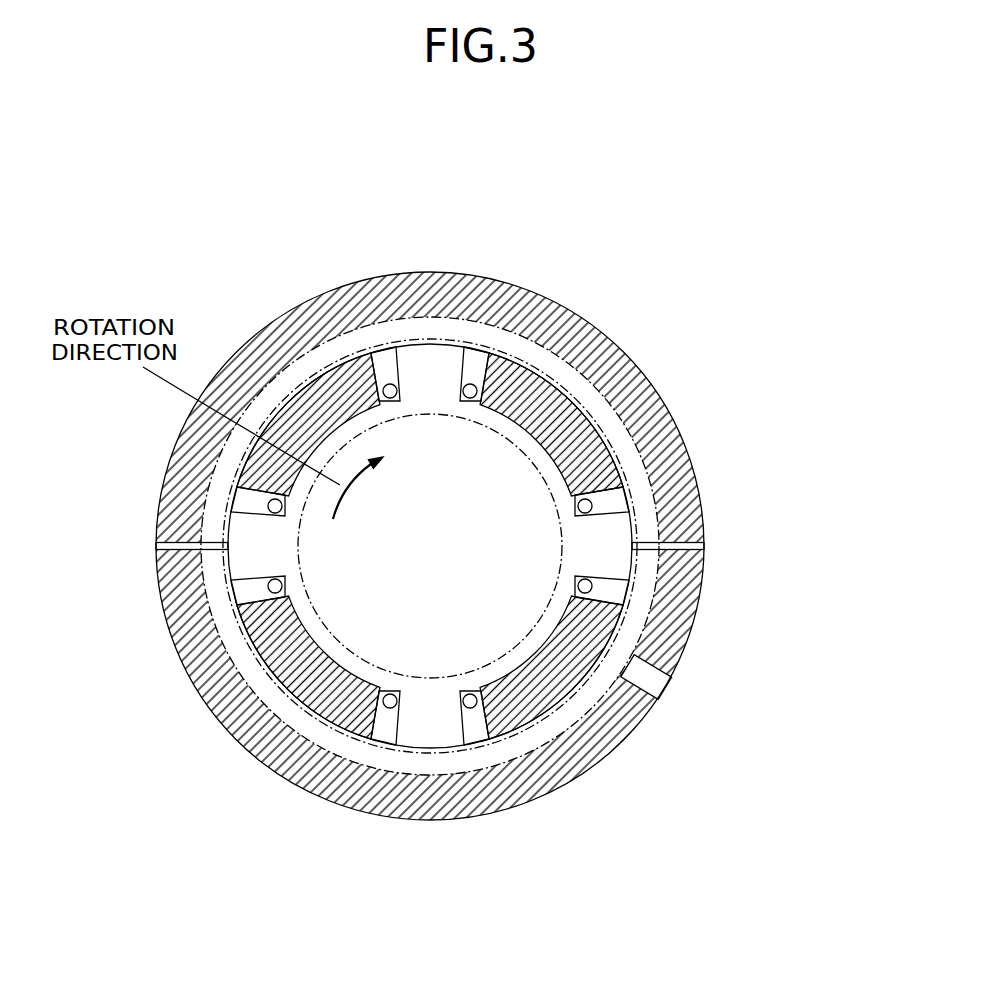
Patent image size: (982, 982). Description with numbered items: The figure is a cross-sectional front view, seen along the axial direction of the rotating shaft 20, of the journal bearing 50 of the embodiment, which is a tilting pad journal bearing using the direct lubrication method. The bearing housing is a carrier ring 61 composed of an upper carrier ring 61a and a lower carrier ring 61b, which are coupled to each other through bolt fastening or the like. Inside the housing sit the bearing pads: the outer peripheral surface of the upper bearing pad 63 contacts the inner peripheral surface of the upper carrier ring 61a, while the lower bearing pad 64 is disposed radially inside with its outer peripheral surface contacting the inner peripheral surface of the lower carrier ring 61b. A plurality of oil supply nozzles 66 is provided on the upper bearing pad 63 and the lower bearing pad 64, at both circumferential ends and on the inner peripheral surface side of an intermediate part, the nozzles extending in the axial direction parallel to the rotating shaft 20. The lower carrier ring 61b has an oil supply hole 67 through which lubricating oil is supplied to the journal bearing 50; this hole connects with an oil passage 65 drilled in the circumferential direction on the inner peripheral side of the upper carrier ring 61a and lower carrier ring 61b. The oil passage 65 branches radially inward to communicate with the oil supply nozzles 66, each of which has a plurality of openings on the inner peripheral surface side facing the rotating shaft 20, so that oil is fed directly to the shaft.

The rotating shaft 20 is at (428, 440).
The journal bearing 50 is at (515, 574).
The carrier ring 61 is at (515, 574).
The upper carrier ring 61a is at (352, 302).
The lower carrier ring 61b is at (483, 785).
The upper bearing pad 63 is at (583, 433).
The lower bearing pad 64 is at (297, 680).
The oil passage 65 is at (556, 725).
The oil supply nozzle 66 is at (390, 702).
The oil supply hole 67 is at (670, 690).